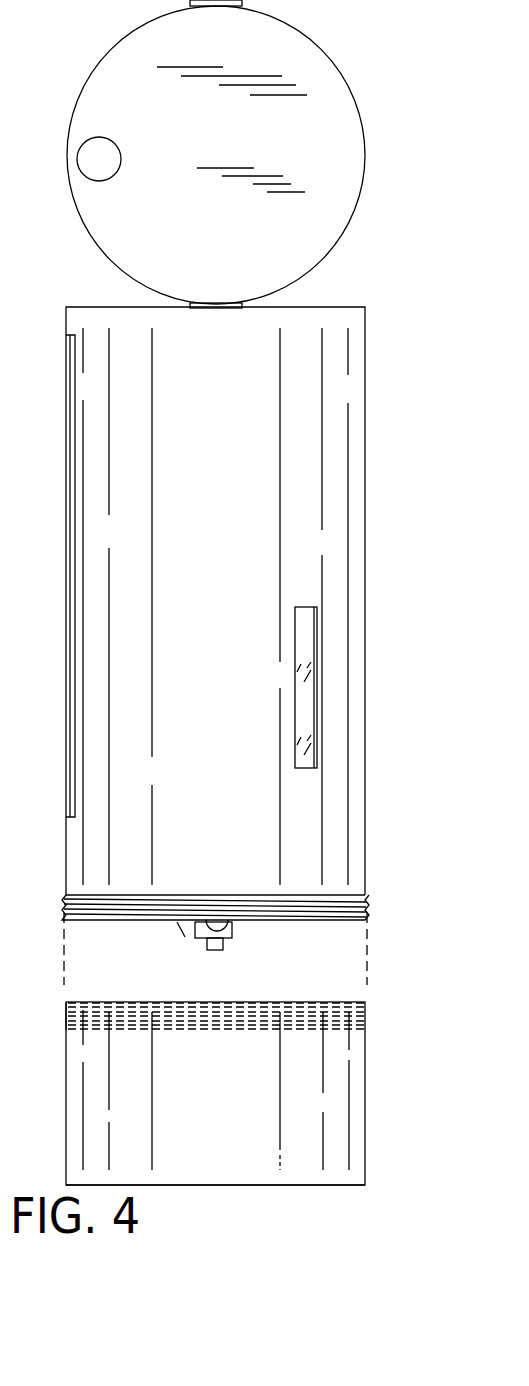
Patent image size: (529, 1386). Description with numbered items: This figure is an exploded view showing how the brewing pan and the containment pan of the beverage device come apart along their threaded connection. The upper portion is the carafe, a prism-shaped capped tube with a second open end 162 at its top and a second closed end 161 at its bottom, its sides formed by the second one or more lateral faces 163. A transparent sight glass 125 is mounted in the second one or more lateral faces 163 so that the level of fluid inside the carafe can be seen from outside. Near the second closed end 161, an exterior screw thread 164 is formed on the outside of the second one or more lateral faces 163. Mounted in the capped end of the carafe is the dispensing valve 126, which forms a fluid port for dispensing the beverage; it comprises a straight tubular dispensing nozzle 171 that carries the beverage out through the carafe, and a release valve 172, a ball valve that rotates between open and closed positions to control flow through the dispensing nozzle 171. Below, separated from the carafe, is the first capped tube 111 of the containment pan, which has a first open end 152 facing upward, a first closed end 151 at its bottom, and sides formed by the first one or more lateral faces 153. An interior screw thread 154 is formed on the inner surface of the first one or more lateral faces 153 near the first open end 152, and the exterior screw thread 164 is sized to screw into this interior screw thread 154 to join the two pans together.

The first capped tube 111 is at (366, 1120).
The sight glass 125 is at (313, 663).
The dispensing valve 126 is at (242, 933).
The first closed end 151 is at (303, 1185).
The first open end 152 is at (348, 1000).
The first one or more lateral faces 153 is at (303, 1094).
The interior screw thread 154 is at (83, 1017).
The second closed end 161 is at (330, 895).
The second open end 162 is at (338, 307).
The second one or more lateral faces 163 is at (322, 458).
The exterior screw thread 164 is at (365, 910).
The dispensing nozzle 171 is at (213, 950).
The release valve 172 is at (185, 937).